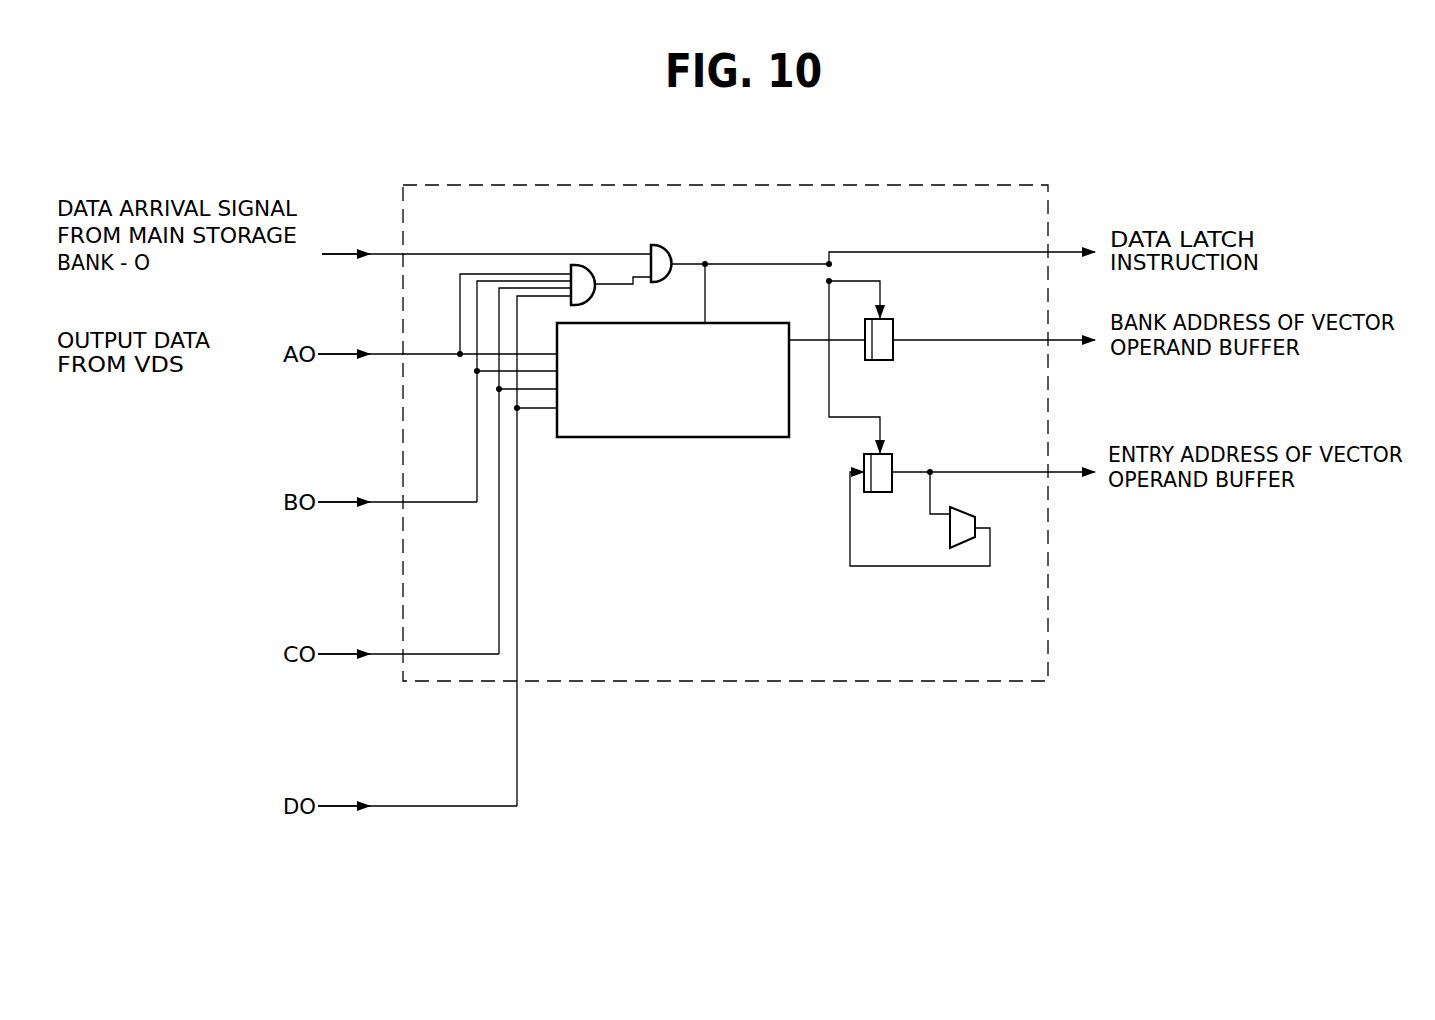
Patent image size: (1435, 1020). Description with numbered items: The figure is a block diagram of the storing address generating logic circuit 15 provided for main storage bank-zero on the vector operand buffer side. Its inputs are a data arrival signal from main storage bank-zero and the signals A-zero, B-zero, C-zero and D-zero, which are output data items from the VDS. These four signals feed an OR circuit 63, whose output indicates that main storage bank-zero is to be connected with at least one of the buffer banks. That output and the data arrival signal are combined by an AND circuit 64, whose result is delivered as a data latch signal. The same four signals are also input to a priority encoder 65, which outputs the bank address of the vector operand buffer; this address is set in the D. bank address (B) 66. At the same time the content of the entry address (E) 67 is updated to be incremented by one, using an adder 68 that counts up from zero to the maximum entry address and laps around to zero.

The storing address generating logic circuit 15 is at (1048, 212).
The OR circuit 63 is at (595, 291).
The AND circuit 64 is at (668, 257).
The priority encoder 65 is at (769, 322).
The D. bank address (B) 66 is at (889, 318).
The entry address (E) 67 is at (888, 453).
The adder 68 is at (975, 521).